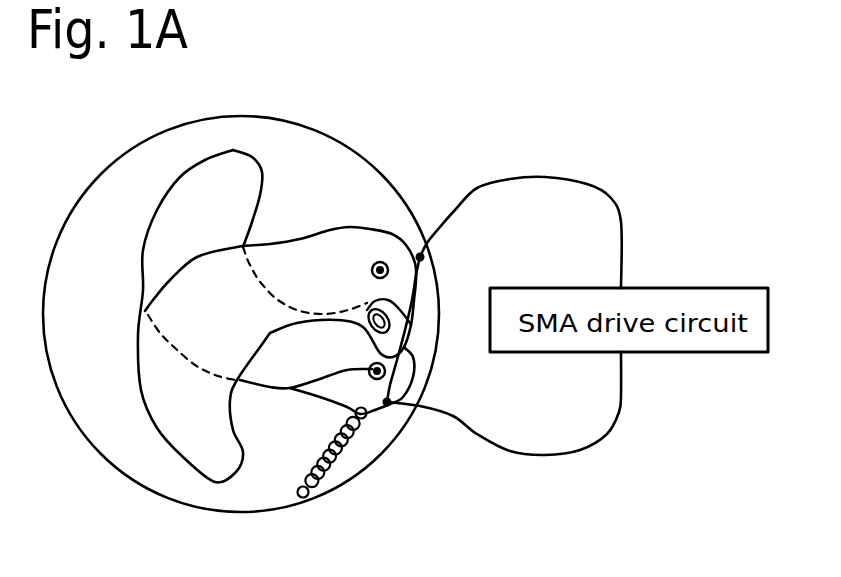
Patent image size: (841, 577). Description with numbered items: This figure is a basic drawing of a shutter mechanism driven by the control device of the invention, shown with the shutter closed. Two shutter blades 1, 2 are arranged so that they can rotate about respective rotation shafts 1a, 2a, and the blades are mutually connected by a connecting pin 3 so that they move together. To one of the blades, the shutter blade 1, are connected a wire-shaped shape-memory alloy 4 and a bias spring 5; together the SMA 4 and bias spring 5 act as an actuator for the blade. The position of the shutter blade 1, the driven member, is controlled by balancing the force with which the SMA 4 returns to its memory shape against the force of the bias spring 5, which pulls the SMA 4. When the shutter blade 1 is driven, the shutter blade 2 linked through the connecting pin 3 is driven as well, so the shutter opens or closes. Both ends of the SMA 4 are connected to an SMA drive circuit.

The shutter blade 1 is at (183, 223).
The rotation shaft 1a is at (283, 390).
The shutter blade 2 is at (153, 405).
The rotation shaft 2a is at (380, 260).
The connecting pin 3 is at (370, 313).
The shape-memory alloy (SMA) 4 is at (422, 300).
The bias spring 5 is at (343, 447).